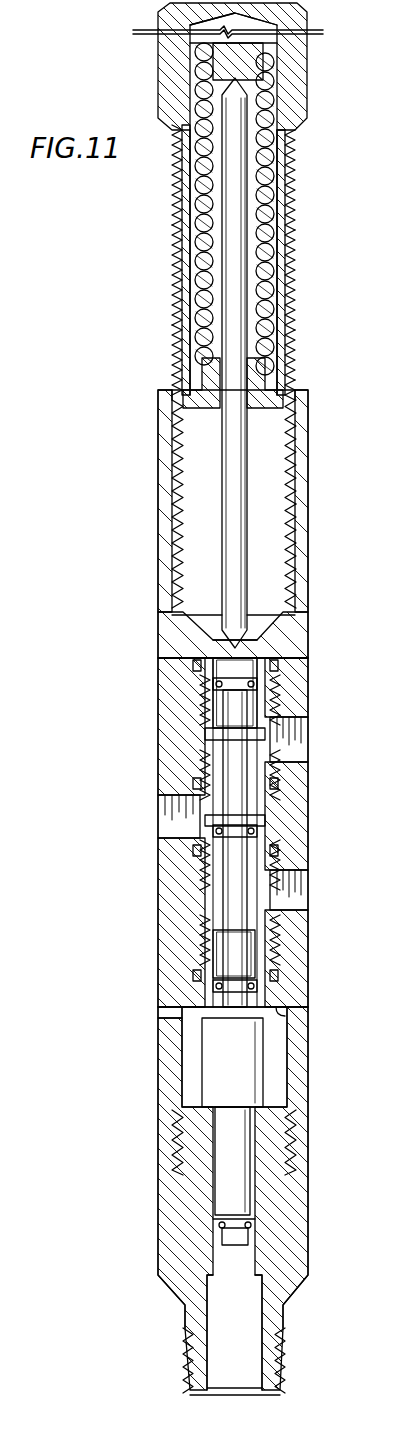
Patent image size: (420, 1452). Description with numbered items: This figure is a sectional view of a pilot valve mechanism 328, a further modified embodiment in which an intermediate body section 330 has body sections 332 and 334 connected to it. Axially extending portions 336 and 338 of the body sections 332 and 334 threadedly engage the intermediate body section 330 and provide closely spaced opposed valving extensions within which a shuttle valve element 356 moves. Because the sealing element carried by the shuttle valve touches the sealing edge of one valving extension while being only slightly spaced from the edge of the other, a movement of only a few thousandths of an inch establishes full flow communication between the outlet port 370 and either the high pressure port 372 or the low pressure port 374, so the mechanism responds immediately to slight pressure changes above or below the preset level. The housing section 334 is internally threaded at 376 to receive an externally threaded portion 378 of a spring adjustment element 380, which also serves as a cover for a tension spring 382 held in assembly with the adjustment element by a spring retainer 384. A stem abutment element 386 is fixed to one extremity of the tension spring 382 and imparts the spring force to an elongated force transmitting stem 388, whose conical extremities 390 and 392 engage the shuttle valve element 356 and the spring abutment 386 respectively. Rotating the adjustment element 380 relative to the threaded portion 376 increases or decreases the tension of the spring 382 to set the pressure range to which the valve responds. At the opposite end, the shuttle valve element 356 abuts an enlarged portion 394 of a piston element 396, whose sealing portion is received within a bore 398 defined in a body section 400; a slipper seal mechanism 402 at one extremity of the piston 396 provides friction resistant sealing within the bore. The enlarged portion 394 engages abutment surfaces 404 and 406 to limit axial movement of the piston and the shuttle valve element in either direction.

The spring adjustment element 380 is at (293, 53).
The stem abutment element 386 is at (200, 58).
The conical extremity 392 is at (262, 84).
The force transmitting stem 388 is at (232, 185).
The tension spring 382 is at (185, 205).
The externally threaded portion 378 is at (290, 266).
The spring retainer 384 is at (285, 392).
The body section 334 is at (175, 490).
The internal threads 376 is at (285, 478).
The conical extremity 390 is at (185, 629).
The pilot valve mechanism 328 is at (149, 711).
The axially extending portion 338 is at (270, 700).
The shuttle valve element 356 is at (230, 786).
The high pressure port 372 is at (300, 744).
The outlet port 370 is at (170, 826).
The intermediate body section 330 is at (175, 890).
The low pressure port 374 is at (298, 896).
The axially extending portion 336 is at (255, 946).
The abutment surface 406 is at (290, 1012).
The body section 332 is at (170, 1045).
The enlarged portion 394 is at (258, 1050).
The piston element 396 is at (210, 1080).
The abutment surface 404 is at (290, 1108).
The bore 398 is at (250, 1166).
The slipper seal mechanism 402 is at (220, 1221).
The body section 400 is at (290, 1250).